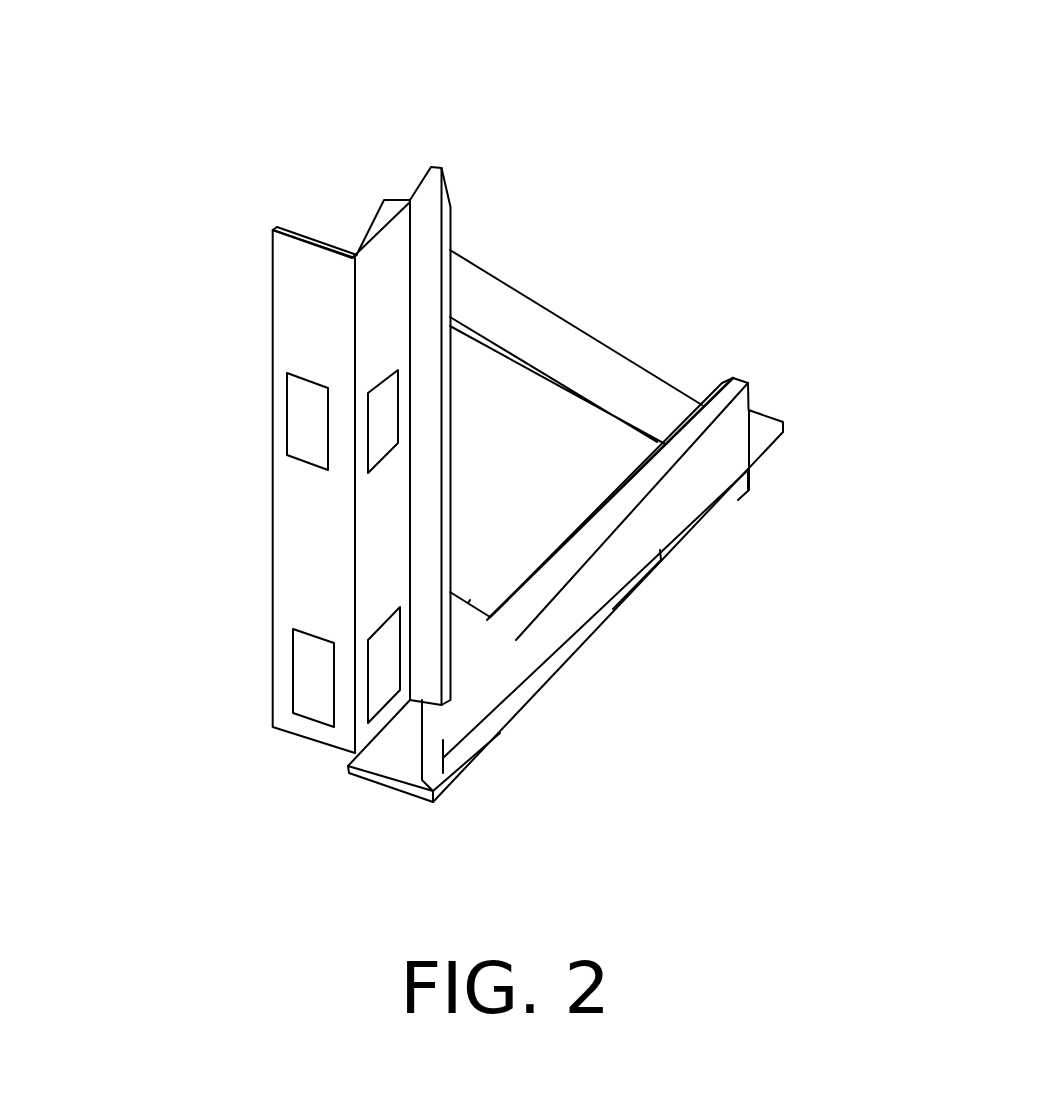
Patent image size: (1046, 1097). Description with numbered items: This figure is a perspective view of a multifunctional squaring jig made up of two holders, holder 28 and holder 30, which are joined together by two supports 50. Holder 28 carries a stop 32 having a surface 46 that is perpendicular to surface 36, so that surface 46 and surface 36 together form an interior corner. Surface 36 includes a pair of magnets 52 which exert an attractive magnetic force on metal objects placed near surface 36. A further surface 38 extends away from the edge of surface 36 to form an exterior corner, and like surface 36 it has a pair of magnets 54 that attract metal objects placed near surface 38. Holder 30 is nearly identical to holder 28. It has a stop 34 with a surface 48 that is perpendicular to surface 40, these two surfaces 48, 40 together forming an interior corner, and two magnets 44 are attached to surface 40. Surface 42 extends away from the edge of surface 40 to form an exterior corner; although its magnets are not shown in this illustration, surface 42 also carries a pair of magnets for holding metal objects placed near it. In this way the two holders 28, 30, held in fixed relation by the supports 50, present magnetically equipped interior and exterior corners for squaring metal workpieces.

The holder 28 is at (271, 455).
The holder 30 is at (682, 554).
The stop 32 is at (447, 205).
The stop 34 is at (766, 402).
The surface 36 is at (354, 469).
The surface 38 is at (216, 490).
The surface 40 is at (648, 641).
The surface 42 is at (372, 782).
The magnets 44 is at (487, 730).
The surface 46 is at (440, 255).
The surface 48 is at (750, 460).
The supports 50 is at (642, 366).
The magnets 52 is at (365, 695).
The magnets 54 is at (292, 662).